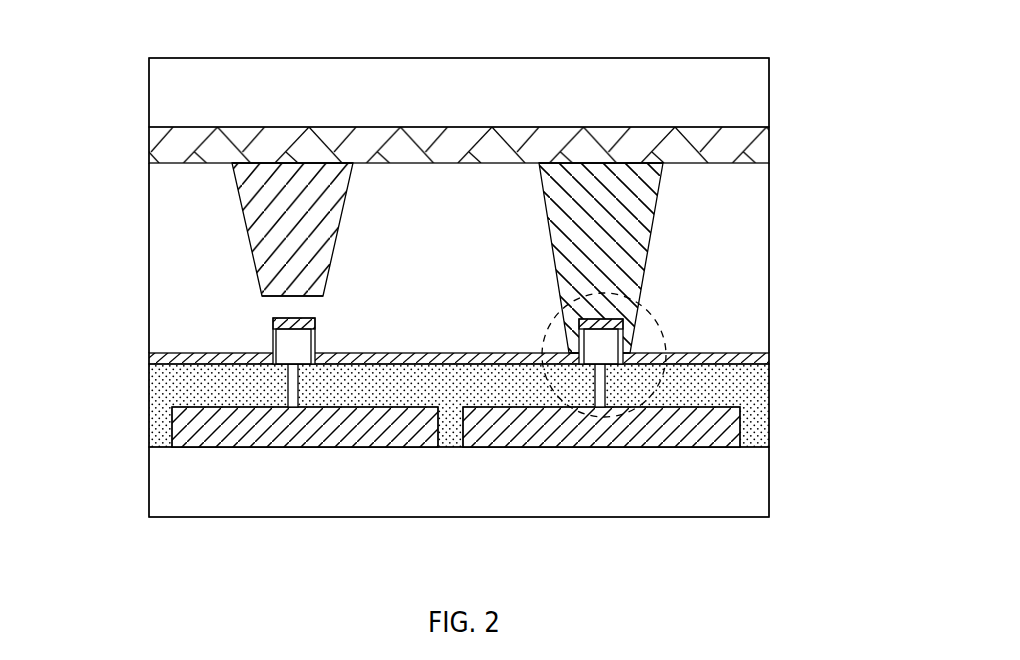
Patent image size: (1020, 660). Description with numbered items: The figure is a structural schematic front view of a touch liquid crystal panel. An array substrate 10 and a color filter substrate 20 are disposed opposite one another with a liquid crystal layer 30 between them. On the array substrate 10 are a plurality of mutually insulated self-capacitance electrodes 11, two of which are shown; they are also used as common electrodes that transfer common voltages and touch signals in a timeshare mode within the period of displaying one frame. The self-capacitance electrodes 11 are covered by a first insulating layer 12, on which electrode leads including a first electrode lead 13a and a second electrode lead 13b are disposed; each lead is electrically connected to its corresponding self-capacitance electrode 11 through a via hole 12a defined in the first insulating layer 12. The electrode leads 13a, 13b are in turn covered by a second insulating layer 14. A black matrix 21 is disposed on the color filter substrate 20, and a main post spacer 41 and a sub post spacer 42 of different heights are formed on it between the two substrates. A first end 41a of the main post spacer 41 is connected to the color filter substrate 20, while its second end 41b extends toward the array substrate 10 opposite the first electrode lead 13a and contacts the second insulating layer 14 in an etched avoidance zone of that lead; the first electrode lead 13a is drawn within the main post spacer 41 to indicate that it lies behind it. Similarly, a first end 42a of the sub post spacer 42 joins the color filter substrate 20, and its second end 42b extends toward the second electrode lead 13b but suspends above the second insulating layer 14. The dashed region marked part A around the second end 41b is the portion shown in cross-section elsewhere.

The array substrate 10 is at (750, 482).
The self-capacitance electrodes 11 is at (195, 433).
The first insulating layer 12 is at (750, 404).
The via hole 12a is at (296, 403).
The first electrode lead 13a is at (600, 345).
The second electrode lead 13b is at (290, 345).
The second insulating layer 14 is at (765, 360).
The color filter substrate 20 is at (748, 93).
The black matrix 21 is at (170, 146).
The liquid crystal layer 30 is at (178, 303).
The main post spacer 41 is at (842, 203).
The first end of the main post spacer 41a is at (648, 181).
The second end of the main post spacer 41b is at (627, 332).
The sub post spacer 42 is at (82, 172).
The first end of the sub post spacer 42a is at (240, 177).
The second end of the sub post spacer 42b is at (268, 284).
The part A is at (668, 336).